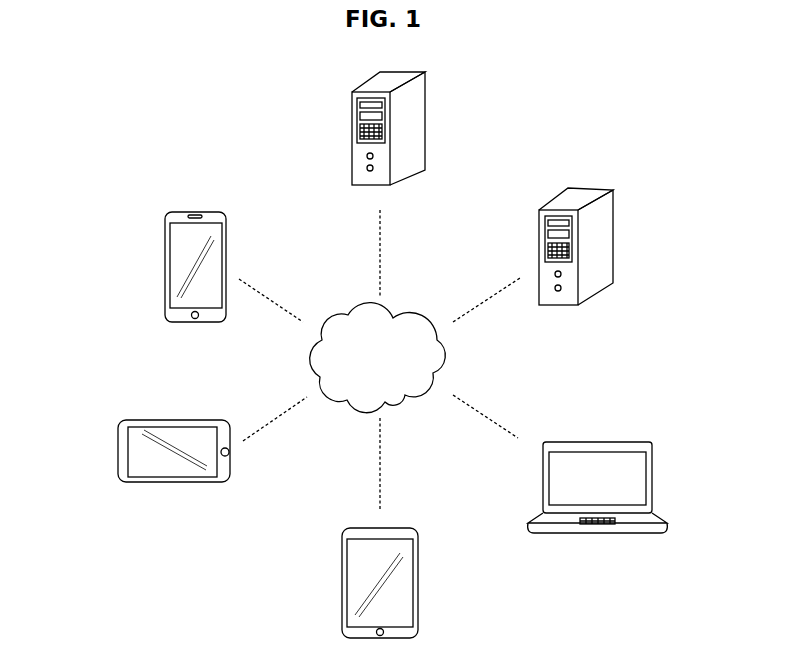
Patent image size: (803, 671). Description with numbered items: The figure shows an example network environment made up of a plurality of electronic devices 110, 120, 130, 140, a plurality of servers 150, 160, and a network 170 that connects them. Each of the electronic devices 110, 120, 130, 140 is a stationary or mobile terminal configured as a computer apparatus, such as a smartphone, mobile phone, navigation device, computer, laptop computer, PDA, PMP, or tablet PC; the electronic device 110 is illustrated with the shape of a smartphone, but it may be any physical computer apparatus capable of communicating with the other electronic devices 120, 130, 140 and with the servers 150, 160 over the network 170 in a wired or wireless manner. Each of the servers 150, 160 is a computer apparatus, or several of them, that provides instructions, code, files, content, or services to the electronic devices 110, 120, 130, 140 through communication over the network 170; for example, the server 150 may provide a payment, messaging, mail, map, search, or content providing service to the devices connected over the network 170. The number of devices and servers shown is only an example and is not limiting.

The electronic device 110 is at (165, 268).
The electronic device 120 is at (118, 452).
The electronic device 130 is at (418, 580).
The electronic device 140 is at (652, 478).
The server 150 is at (613, 235).
The server 160 is at (425, 115).
The network 170 is at (400, 318).